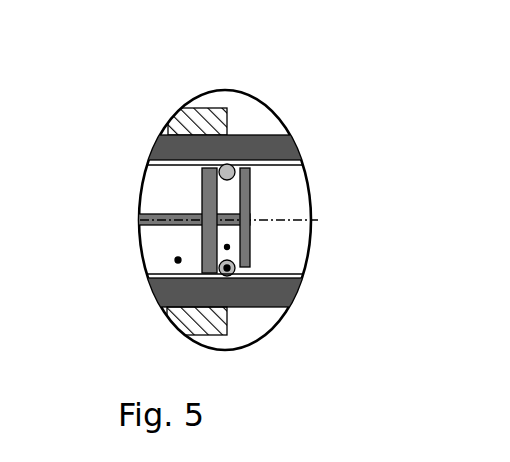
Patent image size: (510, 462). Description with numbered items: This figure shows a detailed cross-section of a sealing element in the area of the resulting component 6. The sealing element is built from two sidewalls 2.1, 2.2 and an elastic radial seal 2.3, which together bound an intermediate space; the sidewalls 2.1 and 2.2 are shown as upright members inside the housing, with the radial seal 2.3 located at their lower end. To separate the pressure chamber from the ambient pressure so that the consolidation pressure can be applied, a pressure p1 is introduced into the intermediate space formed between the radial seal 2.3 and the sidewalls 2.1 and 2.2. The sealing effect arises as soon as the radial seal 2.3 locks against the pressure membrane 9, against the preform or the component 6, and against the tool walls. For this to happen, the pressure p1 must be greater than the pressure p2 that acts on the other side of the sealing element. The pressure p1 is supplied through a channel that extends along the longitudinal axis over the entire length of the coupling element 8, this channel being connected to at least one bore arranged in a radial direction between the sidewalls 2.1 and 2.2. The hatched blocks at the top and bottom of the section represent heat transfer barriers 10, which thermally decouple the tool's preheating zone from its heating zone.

The heat transfer barrier 10 is at (205, 118).
The component 6 is at (283, 152).
The coupling element 8 is at (141, 222).
The sidewall 2.1 is at (208, 198).
The sidewall 2.2 is at (245, 203).
The elastic radial seal 2.3 is at (236, 267).
The pressure membrane 9 is at (297, 270).
The pressure p1 is at (227, 247).
The pressure p2 is at (178, 260).